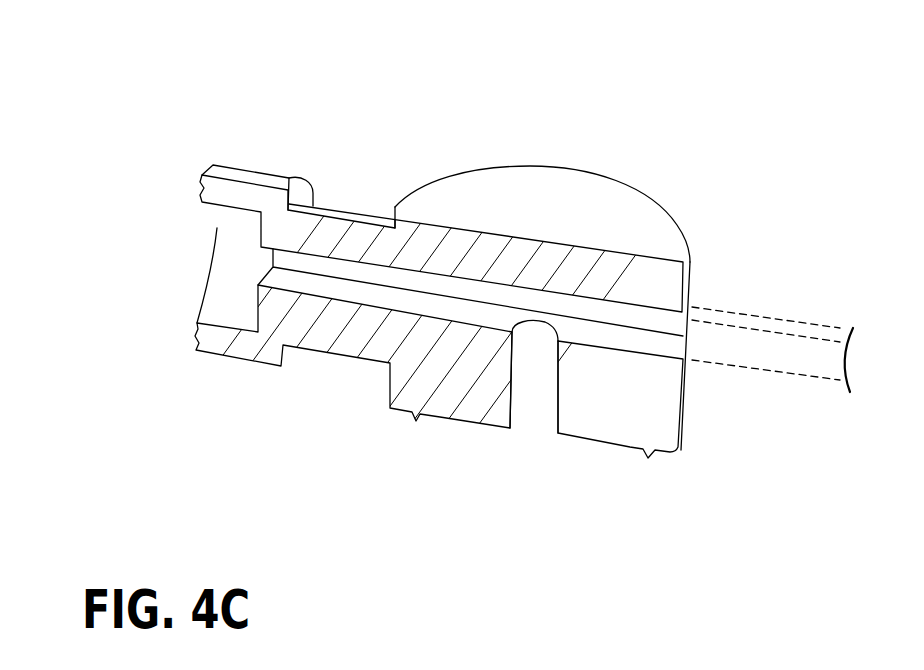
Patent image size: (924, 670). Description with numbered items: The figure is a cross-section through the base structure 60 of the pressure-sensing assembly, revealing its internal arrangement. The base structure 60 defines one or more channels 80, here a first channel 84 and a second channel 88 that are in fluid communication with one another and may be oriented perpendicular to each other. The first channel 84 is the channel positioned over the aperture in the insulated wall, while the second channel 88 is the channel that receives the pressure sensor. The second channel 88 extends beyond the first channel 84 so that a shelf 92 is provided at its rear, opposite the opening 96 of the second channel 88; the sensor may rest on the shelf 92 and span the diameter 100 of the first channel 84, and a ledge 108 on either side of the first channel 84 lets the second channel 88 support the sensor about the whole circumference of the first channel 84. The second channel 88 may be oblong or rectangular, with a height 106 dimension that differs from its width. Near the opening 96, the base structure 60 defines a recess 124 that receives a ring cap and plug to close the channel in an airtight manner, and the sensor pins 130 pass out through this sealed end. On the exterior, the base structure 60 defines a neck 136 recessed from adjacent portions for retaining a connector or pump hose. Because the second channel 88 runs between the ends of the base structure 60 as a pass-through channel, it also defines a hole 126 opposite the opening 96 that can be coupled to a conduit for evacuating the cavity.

The base structure 60 is at (587, 108).
The one or more channels 80 is at (567, 367).
The first channel 84 is at (540, 421).
The second channel 88 is at (470, 278).
The shelf 92 is at (567, 340).
The opening 96 is at (217, 228).
The diameter 100 is at (556, 388).
The height 106 is at (348, 261).
The ledge 108 is at (540, 320).
The recess 124 is at (228, 297).
The hole 126 is at (692, 320).
The sensor pins 130 is at (782, 322).
The neck 136 is at (340, 213).